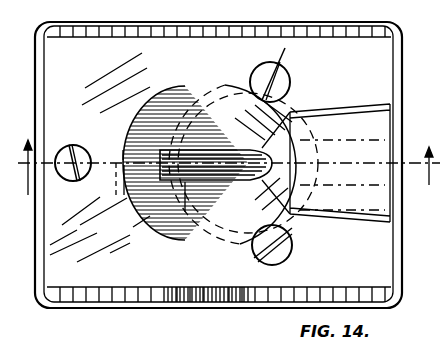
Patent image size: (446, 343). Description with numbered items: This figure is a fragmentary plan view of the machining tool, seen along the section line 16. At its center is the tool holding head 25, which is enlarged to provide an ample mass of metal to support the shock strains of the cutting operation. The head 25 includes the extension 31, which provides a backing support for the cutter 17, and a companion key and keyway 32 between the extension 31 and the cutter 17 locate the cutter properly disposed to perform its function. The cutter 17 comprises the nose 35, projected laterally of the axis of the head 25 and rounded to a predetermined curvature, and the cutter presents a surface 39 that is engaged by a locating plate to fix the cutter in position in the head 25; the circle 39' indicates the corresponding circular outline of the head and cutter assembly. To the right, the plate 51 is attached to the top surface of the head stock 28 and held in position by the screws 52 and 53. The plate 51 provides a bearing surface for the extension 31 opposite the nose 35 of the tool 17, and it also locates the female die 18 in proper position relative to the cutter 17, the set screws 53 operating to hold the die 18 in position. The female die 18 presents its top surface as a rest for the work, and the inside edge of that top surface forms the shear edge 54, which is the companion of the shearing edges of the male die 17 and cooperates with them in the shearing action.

The section line 16 is at (230, 179).
The cutter 17 is at (272, 160).
The female die 18 is at (238, 238).
The tool holding head 25 is at (183, 236).
The head stock 28 is at (398, 293).
The extension 31 is at (130, 155).
The key and keyway 32 is at (148, 167).
The nose 35 is at (268, 172).
The surface 39 is at (198, 135).
The circle 39' is at (232, 153).
The plate 51 is at (383, 247).
The screw 52 is at (75, 180).
The set screw 53 is at (268, 265).
The shear edge 54 is at (210, 195).